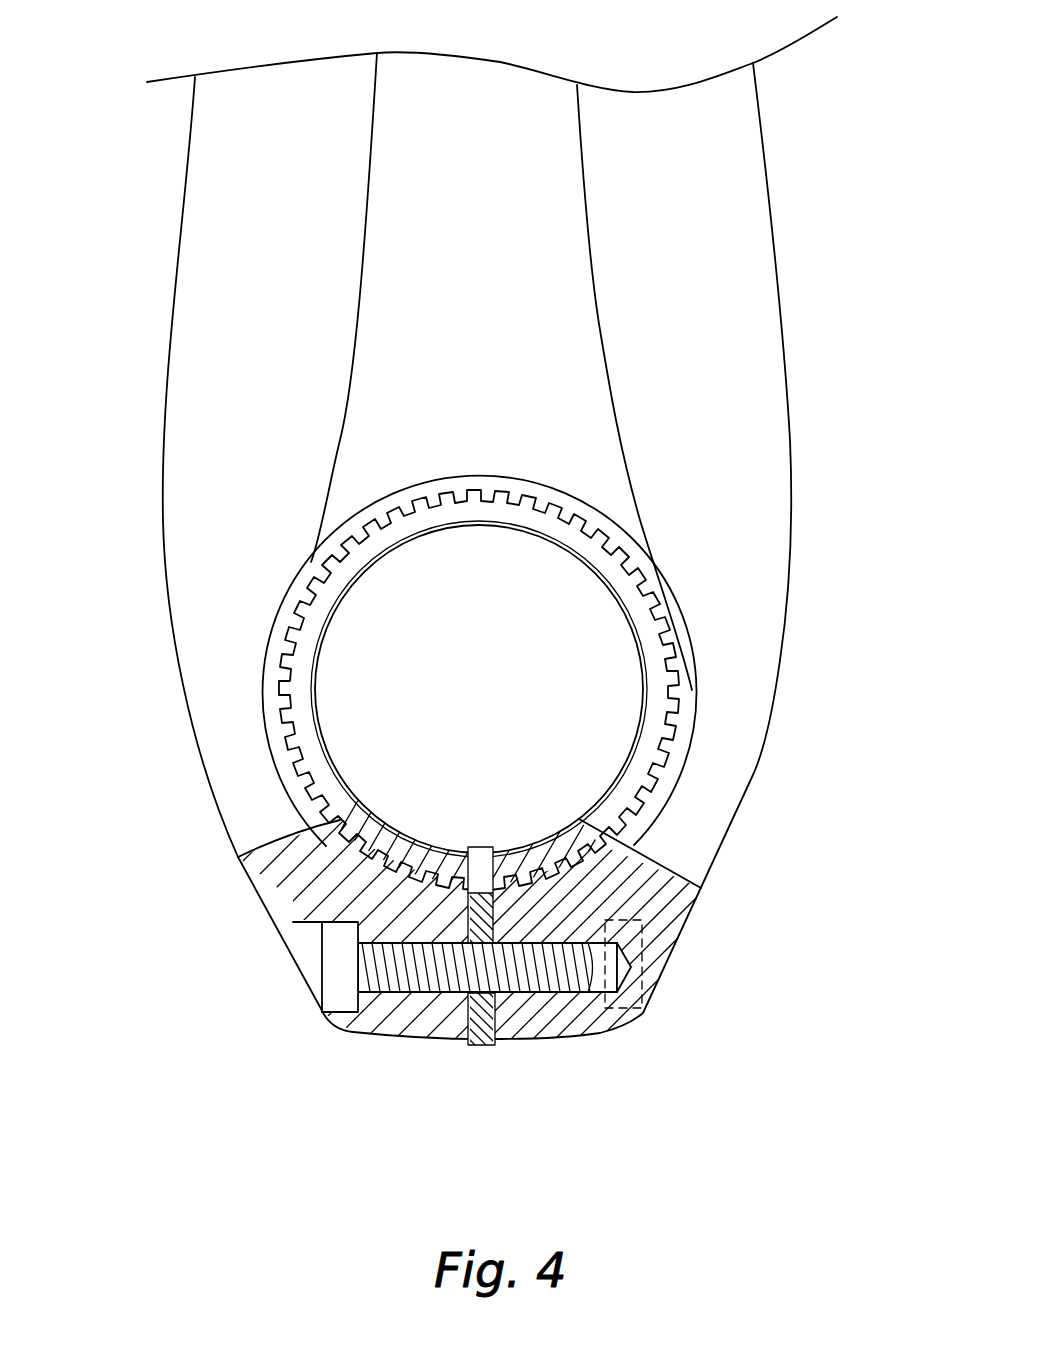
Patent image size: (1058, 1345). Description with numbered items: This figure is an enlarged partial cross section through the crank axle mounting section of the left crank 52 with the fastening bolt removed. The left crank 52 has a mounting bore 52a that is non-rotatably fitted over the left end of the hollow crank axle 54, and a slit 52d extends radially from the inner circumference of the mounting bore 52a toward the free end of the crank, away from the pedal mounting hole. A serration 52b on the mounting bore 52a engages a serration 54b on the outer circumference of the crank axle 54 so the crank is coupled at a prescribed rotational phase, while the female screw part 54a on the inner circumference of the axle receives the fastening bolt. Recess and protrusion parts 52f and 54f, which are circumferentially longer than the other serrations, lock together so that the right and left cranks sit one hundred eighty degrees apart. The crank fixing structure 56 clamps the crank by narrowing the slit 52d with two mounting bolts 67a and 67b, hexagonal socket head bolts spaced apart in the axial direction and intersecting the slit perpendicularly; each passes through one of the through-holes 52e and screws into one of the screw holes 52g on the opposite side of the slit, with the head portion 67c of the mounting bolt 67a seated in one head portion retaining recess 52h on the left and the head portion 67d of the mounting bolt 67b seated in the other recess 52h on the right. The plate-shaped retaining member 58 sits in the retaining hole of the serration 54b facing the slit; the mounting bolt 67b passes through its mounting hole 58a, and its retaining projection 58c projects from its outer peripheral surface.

The left crank 52 is at (731, 228).
The mounting bore 52a is at (650, 637).
The serration 52b is at (557, 617).
The slit 52d is at (482, 1043).
The through-holes 52e is at (407, 1003).
The recess and protrusion part 52f is at (407, 517).
The screw holes 52g is at (563, 1000).
The head portion retaining recesses 52h is at (293, 923).
The crank axle 54 is at (704, 686).
The female screw part 54a is at (425, 540).
The serration 54b is at (557, 617).
The recess and protrusion part 54f is at (407, 507).
The crank fixing structure 56 is at (451, 837).
The retaining member 58 is at (503, 1053).
The mounting hole 58a is at (475, 1003).
The retaining projection 58c is at (485, 853).
The mounting bolt 67a is at (310, 1022).
The mounting bolt 67b is at (663, 993).
The head portion 67c is at (340, 960).
The head portion 67d is at (645, 945).